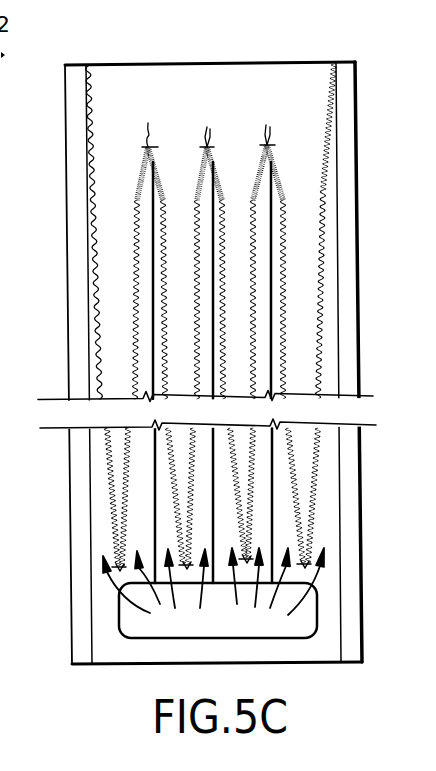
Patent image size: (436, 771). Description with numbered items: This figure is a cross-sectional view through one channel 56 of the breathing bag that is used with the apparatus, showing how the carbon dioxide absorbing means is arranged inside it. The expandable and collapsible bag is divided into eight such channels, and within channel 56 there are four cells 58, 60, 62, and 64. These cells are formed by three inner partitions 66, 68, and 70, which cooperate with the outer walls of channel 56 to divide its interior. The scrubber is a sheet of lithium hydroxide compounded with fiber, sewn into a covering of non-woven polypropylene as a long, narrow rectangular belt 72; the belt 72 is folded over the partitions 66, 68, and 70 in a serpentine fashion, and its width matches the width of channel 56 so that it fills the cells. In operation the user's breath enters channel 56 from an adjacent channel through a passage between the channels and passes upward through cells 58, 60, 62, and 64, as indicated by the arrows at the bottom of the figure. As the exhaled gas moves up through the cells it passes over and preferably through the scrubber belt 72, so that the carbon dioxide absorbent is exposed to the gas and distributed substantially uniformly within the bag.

The channel 56 is at (356, 98).
The cell 58 is at (298, 163).
The cell 60 is at (238, 162).
The cell 62 is at (178, 163).
The cell 64 is at (117, 170).
The inner partition 66 is at (271, 305).
The inner partition 68 is at (213, 305).
The inner partition 70 is at (153, 262).
The CO2 scrubber belt 72 is at (97, 242).